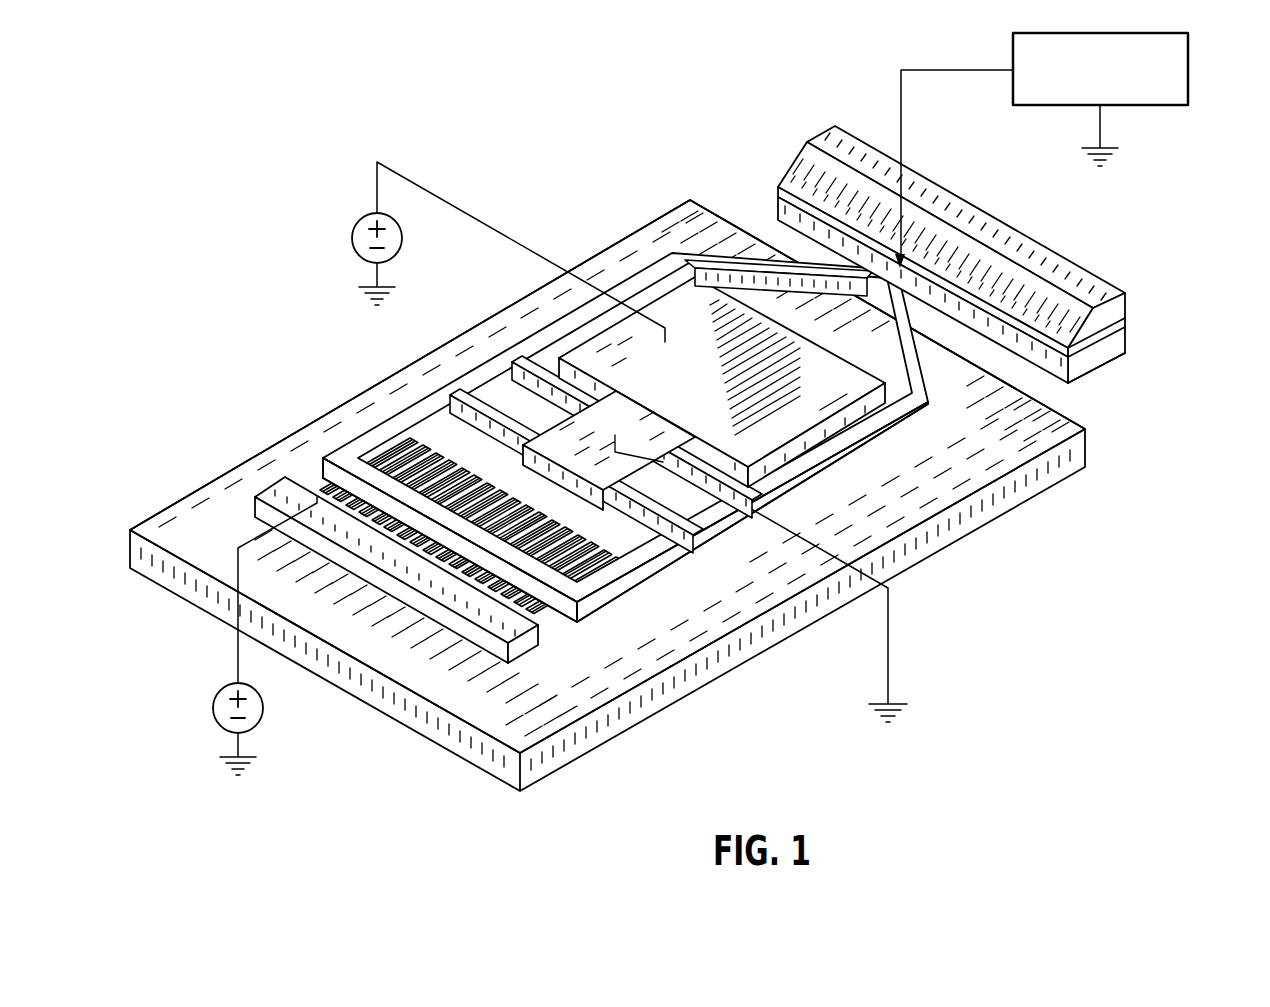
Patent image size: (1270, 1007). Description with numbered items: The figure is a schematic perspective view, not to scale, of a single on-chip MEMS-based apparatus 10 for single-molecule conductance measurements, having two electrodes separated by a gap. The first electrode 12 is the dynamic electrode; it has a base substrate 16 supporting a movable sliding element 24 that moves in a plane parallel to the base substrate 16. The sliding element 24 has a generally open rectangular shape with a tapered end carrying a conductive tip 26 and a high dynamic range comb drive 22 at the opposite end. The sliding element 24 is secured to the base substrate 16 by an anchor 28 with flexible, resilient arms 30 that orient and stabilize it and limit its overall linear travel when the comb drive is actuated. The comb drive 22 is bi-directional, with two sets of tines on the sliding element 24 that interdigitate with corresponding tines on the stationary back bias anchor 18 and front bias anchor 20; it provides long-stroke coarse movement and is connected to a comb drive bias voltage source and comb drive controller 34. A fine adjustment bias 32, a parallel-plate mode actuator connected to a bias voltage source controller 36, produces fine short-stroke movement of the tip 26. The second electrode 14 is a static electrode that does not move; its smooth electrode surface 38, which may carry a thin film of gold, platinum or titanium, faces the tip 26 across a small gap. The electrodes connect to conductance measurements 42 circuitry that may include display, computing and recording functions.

The apparatus 10 is at (190, 103).
The first electrode 12 is at (732, 602).
The second electrode 14 is at (1098, 292).
The base substrate 16 is at (288, 466).
The back bias anchor 18 is at (468, 616).
The front bias anchor 20 is at (612, 550).
The comb drive 22 is at (598, 602).
The sliding element 24 is at (383, 420).
The conductive tip 26 is at (895, 276).
The anchor 28 is at (593, 428).
The flexible, resilient arms 30 is at (532, 368).
The fine adjustment bias 32 is at (683, 300).
The comb drive controller 34 is at (216, 698).
The bias voltage source controller 36 is at (353, 236).
The electrode surface 38 is at (1050, 372).
The conductance measurements 42 is at (1190, 62).